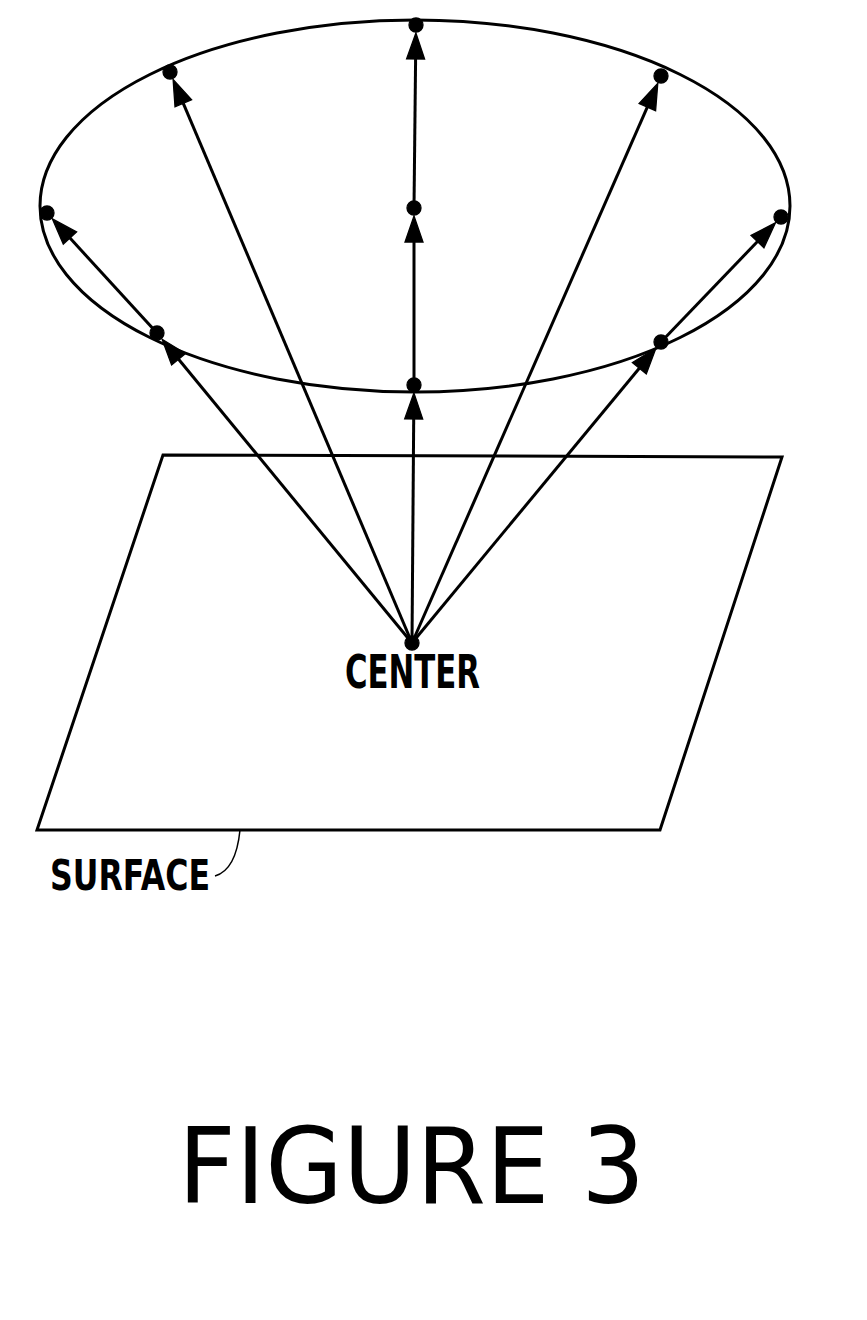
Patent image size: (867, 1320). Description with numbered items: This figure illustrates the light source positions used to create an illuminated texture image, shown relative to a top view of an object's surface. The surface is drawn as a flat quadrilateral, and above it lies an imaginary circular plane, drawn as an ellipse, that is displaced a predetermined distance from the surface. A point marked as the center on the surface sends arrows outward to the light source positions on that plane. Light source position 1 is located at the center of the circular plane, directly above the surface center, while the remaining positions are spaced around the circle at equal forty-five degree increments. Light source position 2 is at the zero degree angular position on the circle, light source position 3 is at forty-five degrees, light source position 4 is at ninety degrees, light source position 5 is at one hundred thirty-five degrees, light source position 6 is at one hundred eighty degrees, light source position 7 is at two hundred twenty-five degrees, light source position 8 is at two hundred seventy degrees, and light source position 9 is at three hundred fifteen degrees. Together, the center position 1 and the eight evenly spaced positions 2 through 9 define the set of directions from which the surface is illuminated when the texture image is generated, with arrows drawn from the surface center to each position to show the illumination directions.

The light source position 1 is at (431, 287).
The light source position 2 is at (431, 111).
The light source position 3 is at (554, 356).
The light source position 4 is at (724, 254).
The light source position 5 is at (540, 467).
The light source position 6 is at (425, 490).
The light source position 7 is at (281, 466).
The light source position 8 is at (98, 241).
The light source position 9 is at (287, 347).